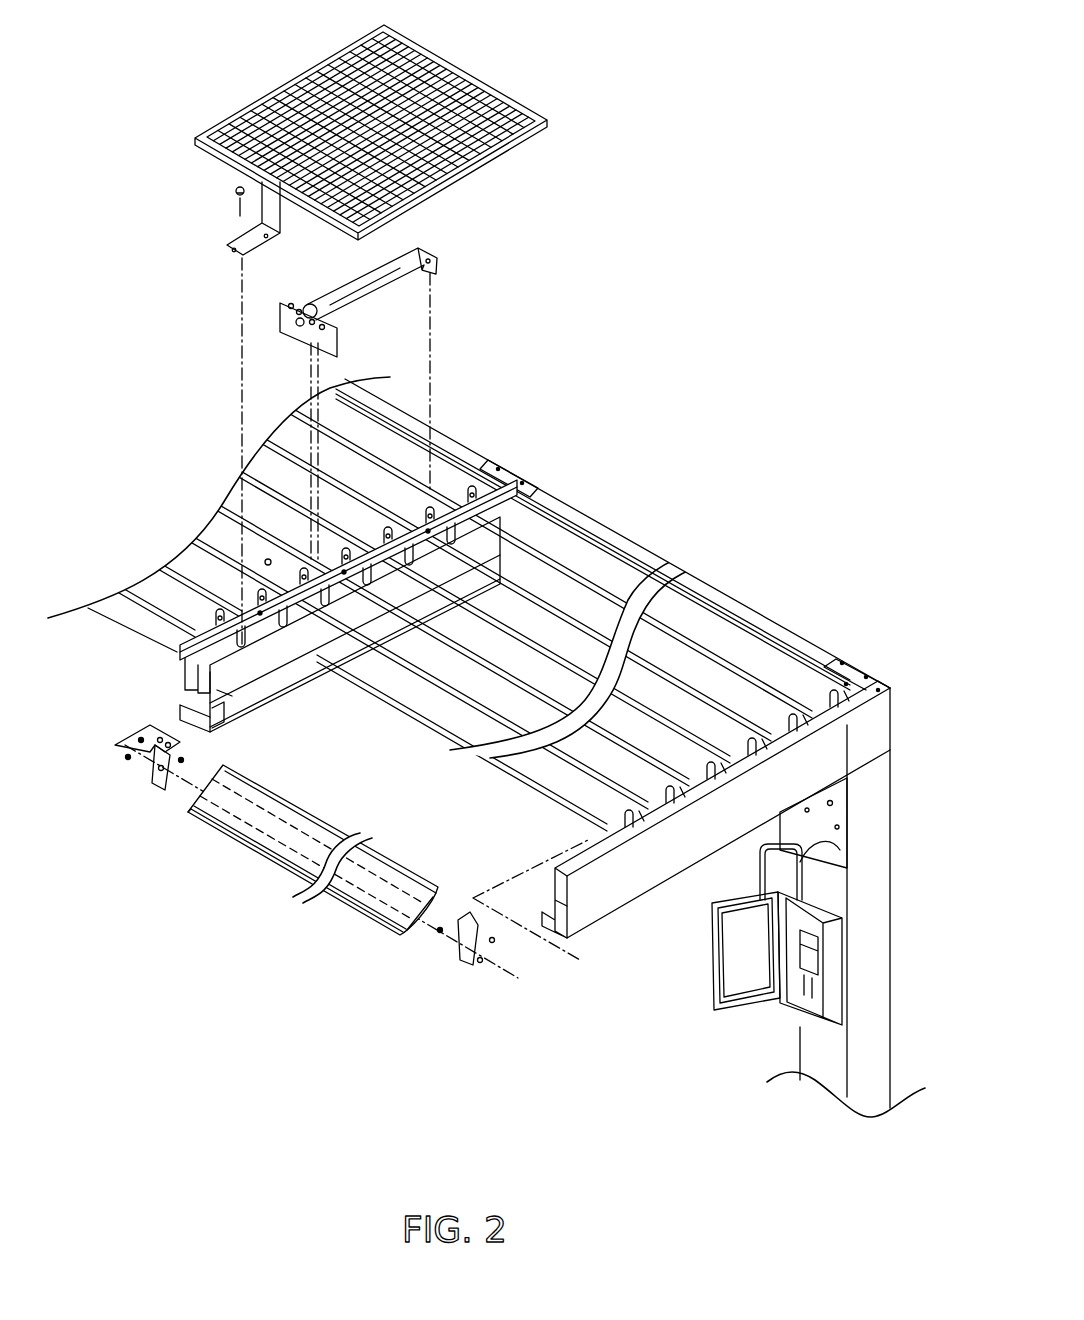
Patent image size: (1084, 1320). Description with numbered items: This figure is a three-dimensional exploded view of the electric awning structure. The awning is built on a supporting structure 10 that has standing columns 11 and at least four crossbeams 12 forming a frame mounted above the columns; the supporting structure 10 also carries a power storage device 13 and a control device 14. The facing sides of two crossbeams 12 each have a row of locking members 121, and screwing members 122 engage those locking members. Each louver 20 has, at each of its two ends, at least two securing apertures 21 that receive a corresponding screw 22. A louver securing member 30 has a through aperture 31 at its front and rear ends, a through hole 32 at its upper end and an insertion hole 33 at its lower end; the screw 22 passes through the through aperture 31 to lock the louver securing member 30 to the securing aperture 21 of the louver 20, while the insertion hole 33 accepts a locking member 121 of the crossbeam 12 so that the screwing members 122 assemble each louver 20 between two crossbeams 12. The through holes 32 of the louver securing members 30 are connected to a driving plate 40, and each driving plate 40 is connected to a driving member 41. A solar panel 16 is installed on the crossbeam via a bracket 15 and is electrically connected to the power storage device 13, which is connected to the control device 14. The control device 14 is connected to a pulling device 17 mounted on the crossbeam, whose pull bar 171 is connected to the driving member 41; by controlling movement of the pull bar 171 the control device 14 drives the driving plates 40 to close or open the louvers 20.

The supporting structure 10 is at (542, 558).
The standing column 11 is at (860, 1010).
The crossbeam 12 is at (542, 523).
The locking member 121 is at (250, 662).
The screwing member 122 is at (187, 812).
The power storage device 13 is at (790, 884).
The control device 14 is at (795, 1003).
The bracket 15 is at (238, 242).
The solar panel 16 is at (460, 95).
The pulling device 17 is at (430, 257).
The pull bar 171 is at (315, 325).
The louver 20 is at (348, 912).
The securing aperture 21 is at (255, 800).
The screw 22 is at (475, 966).
The louver securing member 30 is at (113, 764).
The through aperture 31 is at (137, 733).
The through hole 32 is at (150, 735).
The insertion hole 33 is at (167, 783).
The driving plate 40 is at (330, 528).
The driving member 41 is at (313, 600).